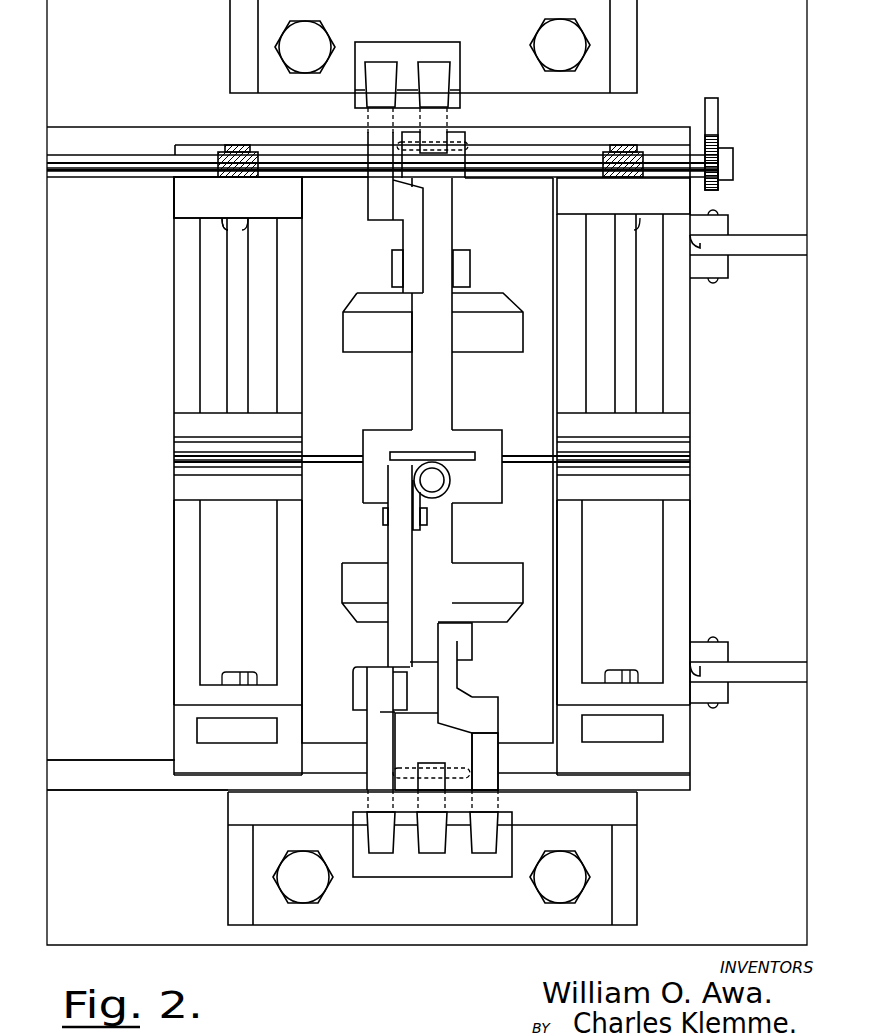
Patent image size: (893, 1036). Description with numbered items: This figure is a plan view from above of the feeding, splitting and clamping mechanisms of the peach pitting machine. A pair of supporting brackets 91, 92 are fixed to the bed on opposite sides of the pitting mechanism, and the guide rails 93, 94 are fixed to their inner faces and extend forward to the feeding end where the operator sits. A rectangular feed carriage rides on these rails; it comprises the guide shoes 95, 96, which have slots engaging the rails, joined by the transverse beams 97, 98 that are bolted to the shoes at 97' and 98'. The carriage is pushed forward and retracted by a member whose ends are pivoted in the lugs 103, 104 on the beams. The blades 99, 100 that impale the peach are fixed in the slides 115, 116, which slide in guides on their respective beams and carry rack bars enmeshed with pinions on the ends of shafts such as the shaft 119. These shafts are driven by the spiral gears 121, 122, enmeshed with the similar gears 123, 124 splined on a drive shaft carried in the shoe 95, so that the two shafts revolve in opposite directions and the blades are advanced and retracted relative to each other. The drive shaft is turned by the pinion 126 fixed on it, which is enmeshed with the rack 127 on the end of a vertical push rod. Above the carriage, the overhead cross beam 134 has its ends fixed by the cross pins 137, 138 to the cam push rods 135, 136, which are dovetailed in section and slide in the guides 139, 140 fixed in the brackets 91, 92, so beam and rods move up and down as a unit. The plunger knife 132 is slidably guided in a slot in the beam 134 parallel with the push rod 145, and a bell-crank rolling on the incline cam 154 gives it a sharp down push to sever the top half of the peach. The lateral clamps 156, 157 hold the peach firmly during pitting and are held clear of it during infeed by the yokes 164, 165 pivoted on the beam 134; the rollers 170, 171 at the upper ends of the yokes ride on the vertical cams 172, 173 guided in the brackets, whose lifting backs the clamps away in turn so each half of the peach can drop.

The supporting bracket 91 is at (230, 48).
The supporting bracket 92 is at (228, 858).
The guide rail 93 is at (122, 137).
The guide rail 94 is at (120, 770).
The guide shoe 95 is at (175, 207).
The guide shoe 96 is at (186, 733).
The transverse beam 97 is at (217, 602).
The bolt 97' is at (231, 451).
The transverse beam 98 is at (645, 602).
The bolt 98' is at (616, 450).
The blade 99 is at (340, 462).
The blade 100 is at (535, 463).
The lug 103 is at (725, 228).
The lug 104 is at (728, 702).
The slide 115 is at (176, 442).
The slide 116 is at (690, 444).
The shaft 119 is at (232, 355).
The spiral gear 121 is at (237, 160).
The spiral gear 122 is at (630, 160).
The spiral gear 123 is at (226, 147).
The spiral gear 124 is at (628, 147).
The pinion 126 is at (722, 148).
The rack 127 is at (718, 112).
The plunger knife 132 is at (432, 466).
The overhead cross beam 134 is at (455, 405).
The cam push rod 135 is at (433, 156).
The cam push rod 136 is at (432, 770).
The cross pin 137 is at (460, 140).
The cross pin 138 is at (498, 768).
The guide 139 is at (412, 42).
The guide 140 is at (420, 872).
The push rod 145 is at (450, 478).
The incline cam 154 is at (485, 852).
The lateral clamp 156 is at (500, 570).
The lateral clamp 157 is at (518, 342).
The yoke 164 is at (458, 648).
The yoke 165 is at (392, 272).
The roller 170 is at (490, 718).
The roller 171 is at (368, 207).
The vertical cam 172 is at (385, 80).
The vertical cam 173 is at (367, 840).